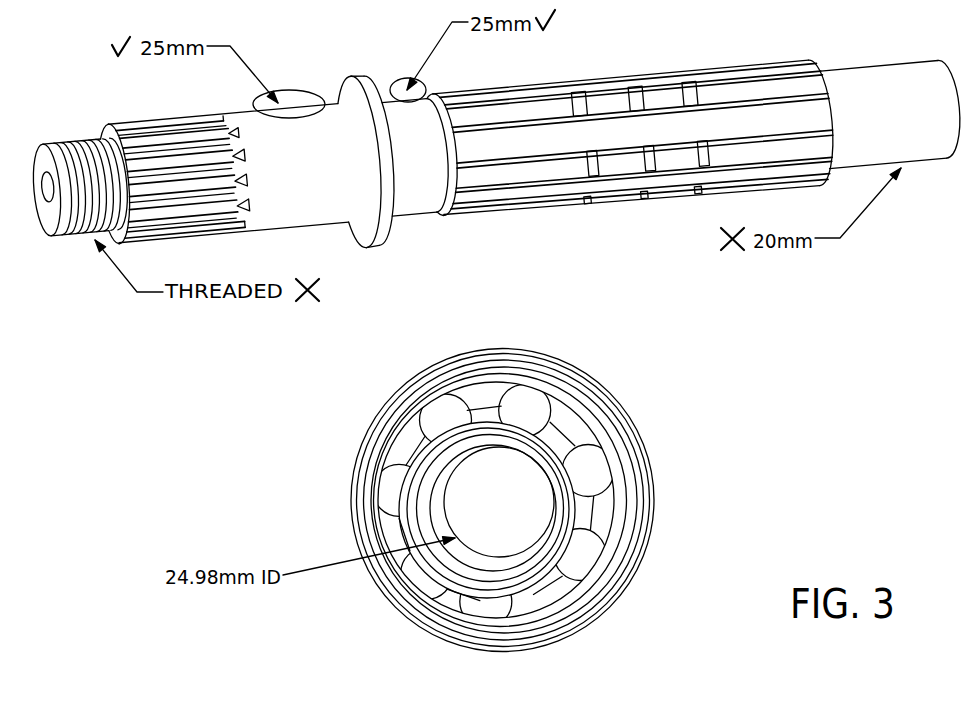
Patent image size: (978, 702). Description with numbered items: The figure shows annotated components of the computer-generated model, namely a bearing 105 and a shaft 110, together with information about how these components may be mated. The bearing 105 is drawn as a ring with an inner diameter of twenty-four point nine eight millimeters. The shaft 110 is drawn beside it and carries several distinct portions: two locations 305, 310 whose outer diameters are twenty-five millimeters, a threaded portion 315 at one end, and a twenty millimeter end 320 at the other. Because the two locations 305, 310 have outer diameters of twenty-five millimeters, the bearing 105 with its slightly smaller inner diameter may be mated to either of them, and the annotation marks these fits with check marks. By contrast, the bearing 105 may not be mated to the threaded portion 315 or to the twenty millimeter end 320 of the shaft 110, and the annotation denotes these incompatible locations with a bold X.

The bearing 105 is at (630, 463).
The shaft 110 is at (418, 220).
The location on the shaft 305 is at (291, 90).
The location on the shaft 310 is at (402, 80).
The threaded portion 315 is at (68, 240).
The 20 mm end 320 is at (876, 62).